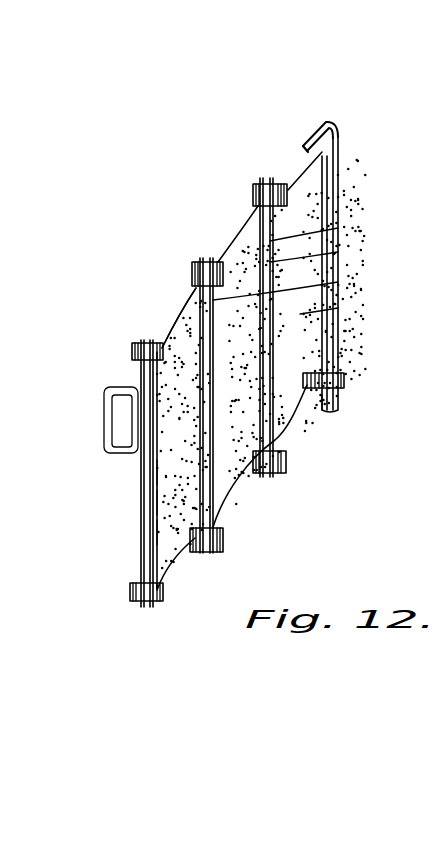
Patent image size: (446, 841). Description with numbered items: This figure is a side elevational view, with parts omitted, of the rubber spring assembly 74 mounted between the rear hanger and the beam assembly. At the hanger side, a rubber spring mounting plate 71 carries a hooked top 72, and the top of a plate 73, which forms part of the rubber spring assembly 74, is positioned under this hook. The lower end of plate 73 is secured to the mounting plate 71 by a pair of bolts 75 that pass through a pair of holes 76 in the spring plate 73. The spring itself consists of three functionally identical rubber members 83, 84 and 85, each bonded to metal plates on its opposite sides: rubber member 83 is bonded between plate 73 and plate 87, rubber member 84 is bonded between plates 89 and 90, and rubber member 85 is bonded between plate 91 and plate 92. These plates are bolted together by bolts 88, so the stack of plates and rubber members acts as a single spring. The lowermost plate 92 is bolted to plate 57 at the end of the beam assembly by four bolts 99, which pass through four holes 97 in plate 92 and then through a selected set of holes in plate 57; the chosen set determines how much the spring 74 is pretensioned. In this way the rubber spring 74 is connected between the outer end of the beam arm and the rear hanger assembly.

The plate 57 is at (142, 565).
The rubber spring mounting plate 71 is at (337, 143).
The hooked top 72 is at (305, 148).
The plate 73 is at (325, 181).
The rubber spring assembly 74 is at (167, 305).
The bolts 75 is at (344, 383).
The holes 76 is at (310, 403).
The rubber member 83 is at (338, 308).
The rubber member 84 is at (237, 410).
The rubber member 85 is at (157, 523).
The plate 87 is at (338, 228).
The bolts 88 is at (253, 188).
The plate 89 is at (338, 252).
The plate 90 is at (338, 282).
The plate 91 is at (153, 501).
The lowermost plate 92 is at (153, 473).
The holes 97 is at (150, 346).
The bolts 99 is at (133, 354).